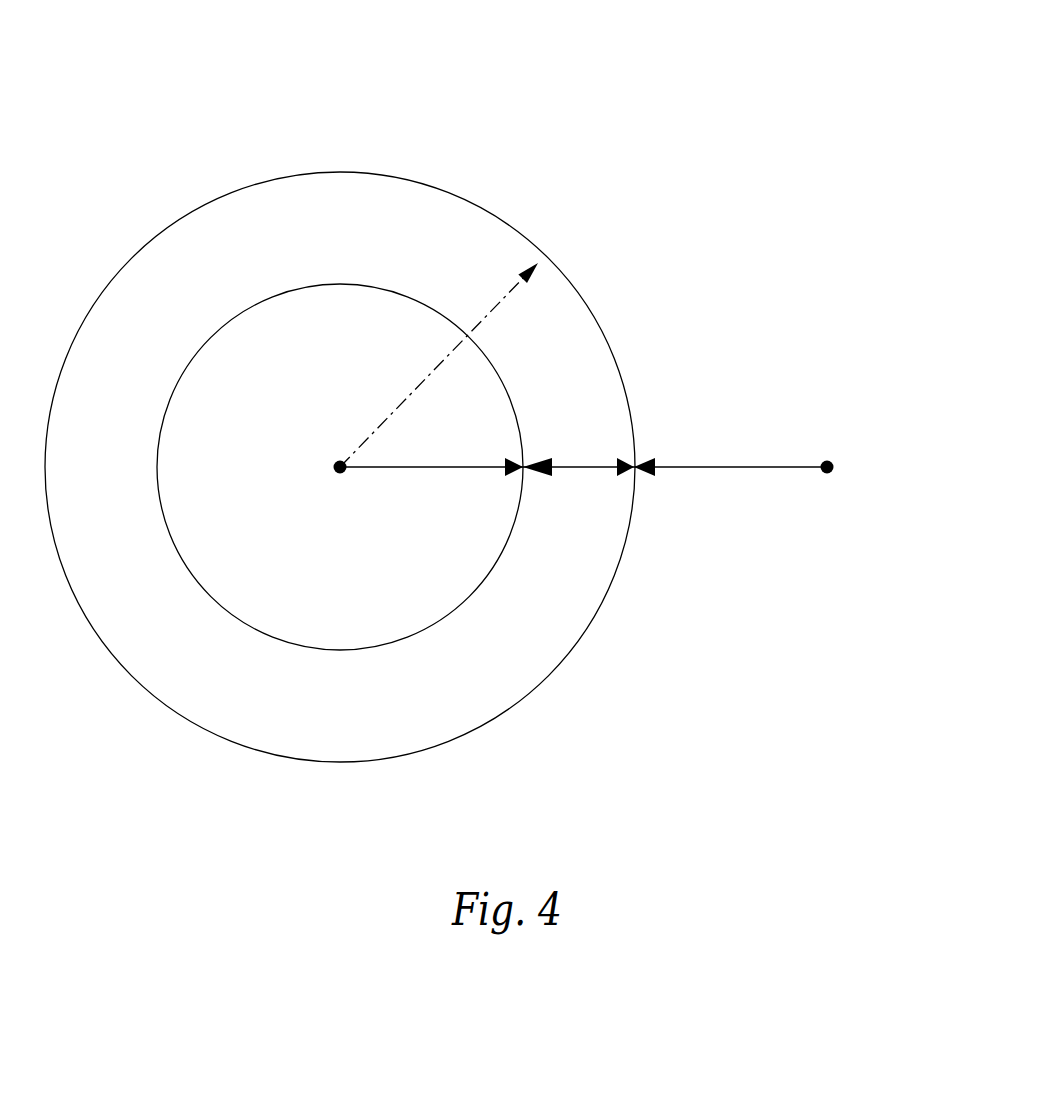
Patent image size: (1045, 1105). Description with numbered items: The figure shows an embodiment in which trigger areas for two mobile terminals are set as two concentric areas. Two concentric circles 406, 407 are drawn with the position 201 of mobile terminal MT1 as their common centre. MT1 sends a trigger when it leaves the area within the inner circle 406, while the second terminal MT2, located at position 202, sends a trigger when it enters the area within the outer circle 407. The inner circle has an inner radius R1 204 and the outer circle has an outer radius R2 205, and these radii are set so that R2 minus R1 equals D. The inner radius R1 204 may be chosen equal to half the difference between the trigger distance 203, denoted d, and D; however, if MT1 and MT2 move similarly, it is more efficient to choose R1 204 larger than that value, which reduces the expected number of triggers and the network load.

The position of mobile terminal MT1 201 is at (330, 466).
The position of mobile terminal MT2 202 is at (835, 452).
The trigger distance 203 is at (580, 457).
The inner radius R1 204 is at (450, 482).
The outer radius R2 205 is at (422, 367).
The inner concentric circle 406 is at (310, 638).
The outer concentric circle 407 is at (502, 210).